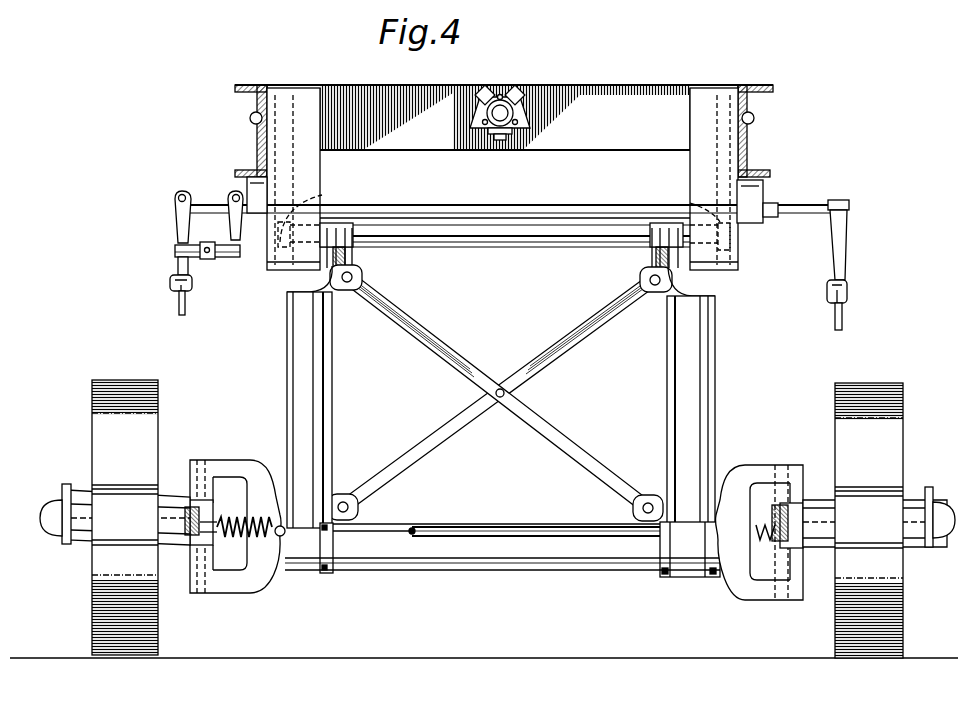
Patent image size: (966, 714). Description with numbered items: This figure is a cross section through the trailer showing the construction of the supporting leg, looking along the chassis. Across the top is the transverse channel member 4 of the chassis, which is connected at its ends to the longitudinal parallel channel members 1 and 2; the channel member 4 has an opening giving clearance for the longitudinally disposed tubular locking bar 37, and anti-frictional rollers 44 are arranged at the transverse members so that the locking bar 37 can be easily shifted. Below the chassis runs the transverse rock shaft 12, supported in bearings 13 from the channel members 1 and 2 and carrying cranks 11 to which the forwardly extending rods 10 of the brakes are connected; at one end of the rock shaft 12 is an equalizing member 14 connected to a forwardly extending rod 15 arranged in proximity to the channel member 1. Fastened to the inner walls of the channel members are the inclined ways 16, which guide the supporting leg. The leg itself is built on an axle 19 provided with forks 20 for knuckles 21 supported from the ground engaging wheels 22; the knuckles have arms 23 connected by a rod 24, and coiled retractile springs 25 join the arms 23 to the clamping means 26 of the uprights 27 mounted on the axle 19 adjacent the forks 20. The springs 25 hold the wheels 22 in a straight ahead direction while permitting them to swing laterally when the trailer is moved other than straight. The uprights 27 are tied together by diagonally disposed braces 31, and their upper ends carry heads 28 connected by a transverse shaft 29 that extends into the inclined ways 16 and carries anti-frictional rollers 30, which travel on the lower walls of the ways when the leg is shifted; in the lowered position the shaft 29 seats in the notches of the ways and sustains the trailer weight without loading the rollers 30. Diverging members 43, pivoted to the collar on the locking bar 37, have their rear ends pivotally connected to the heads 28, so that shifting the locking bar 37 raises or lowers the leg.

The longitudinal channel member 1 is at (262, 108).
The longitudinal channel member 2 is at (746, 108).
The transverse channel member 4 is at (451, 140).
The forwardly extending rod 10 is at (180, 307).
The crank 11 is at (178, 233).
The transverse rock shaft 12 is at (460, 208).
The bearing 13 is at (258, 211).
The equalizing member 14 is at (218, 258).
The forwardly extending rod 15 is at (207, 247).
The inclined way 16 is at (310, 170).
The axle 19 is at (392, 525).
The fork 20 is at (244, 463).
The knuckle 21 is at (205, 556).
The ground engaging wheel 22 is at (155, 433).
The arm 23 is at (185, 522).
The rod 24 is at (516, 528).
The coiled retractile spring 25 is at (248, 560).
The clamping means 26 is at (286, 536).
The upright 27 is at (318, 414).
The head 28 is at (310, 282).
The transverse shaft 29 is at (510, 244).
The anti-frictional roller 30 is at (302, 206).
The diagonally disposed brace 31 is at (482, 362).
The tubular locking bar 37 is at (500, 94).
The diverging member 43 is at (355, 254).
The anti-frictional roller 44 is at (520, 95).